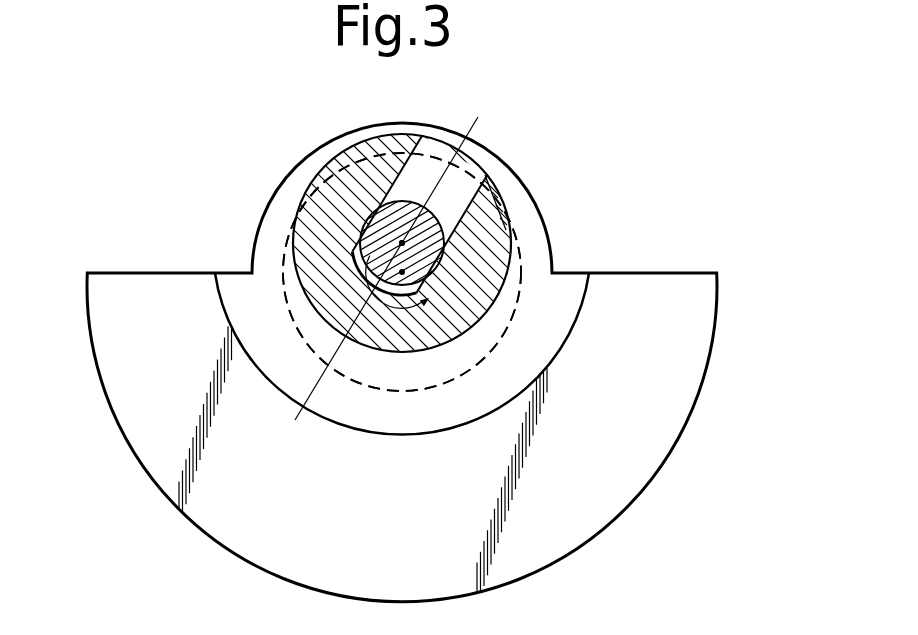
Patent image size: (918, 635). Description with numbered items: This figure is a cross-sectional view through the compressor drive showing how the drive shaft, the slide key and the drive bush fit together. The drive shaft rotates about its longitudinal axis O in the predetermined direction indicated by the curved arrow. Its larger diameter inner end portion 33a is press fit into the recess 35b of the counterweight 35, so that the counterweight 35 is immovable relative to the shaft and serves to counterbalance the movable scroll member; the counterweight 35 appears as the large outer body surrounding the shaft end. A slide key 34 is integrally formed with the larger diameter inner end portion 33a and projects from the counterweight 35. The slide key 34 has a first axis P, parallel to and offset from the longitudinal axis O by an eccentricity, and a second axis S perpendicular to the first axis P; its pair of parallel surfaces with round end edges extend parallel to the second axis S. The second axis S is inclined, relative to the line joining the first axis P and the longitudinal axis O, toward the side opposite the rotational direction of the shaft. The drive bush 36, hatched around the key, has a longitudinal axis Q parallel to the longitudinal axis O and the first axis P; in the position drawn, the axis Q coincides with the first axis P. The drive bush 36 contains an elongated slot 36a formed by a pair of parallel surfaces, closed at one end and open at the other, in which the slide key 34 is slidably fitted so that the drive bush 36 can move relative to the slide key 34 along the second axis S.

The counterweight 35 is at (530, 253).
The slide key 34 is at (330, 182).
The drive bush 36 is at (335, 197).
The elongated slot 36a is at (477, 190).
The second axis S is at (399, 255).
The longitudinal axis of the drive bush Q is at (402, 243).
The first axis P is at (301, 241).
The longitudinal axis of the drive shaft O is at (402, 272).
The larger diameter inner end portion 33a is at (360, 383).
The recess 35b is at (402, 318).